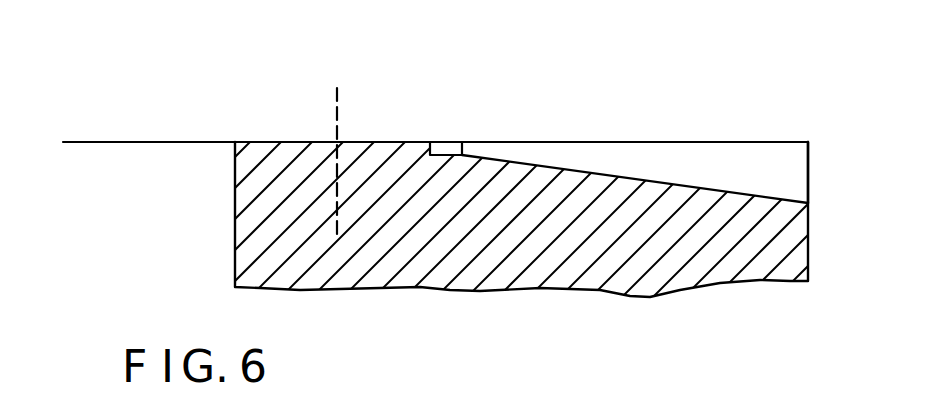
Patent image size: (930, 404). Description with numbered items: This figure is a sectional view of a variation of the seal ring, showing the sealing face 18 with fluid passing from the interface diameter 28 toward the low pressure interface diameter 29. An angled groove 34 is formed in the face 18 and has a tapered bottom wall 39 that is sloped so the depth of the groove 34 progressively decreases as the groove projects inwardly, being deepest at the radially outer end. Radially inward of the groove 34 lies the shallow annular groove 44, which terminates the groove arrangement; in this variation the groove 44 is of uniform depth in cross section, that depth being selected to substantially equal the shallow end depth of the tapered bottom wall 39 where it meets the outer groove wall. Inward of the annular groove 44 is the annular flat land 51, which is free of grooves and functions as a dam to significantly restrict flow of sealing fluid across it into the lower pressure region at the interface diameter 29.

The sealing face 18 is at (256, 142).
The interface diameter 28 is at (808, 223).
The interface diameter 29 is at (336, 128).
The groove 34 is at (718, 158).
The bottom wall 39 is at (606, 175).
The shallow annular groove 44 is at (443, 142).
The annular flat land 51 is at (413, 142).